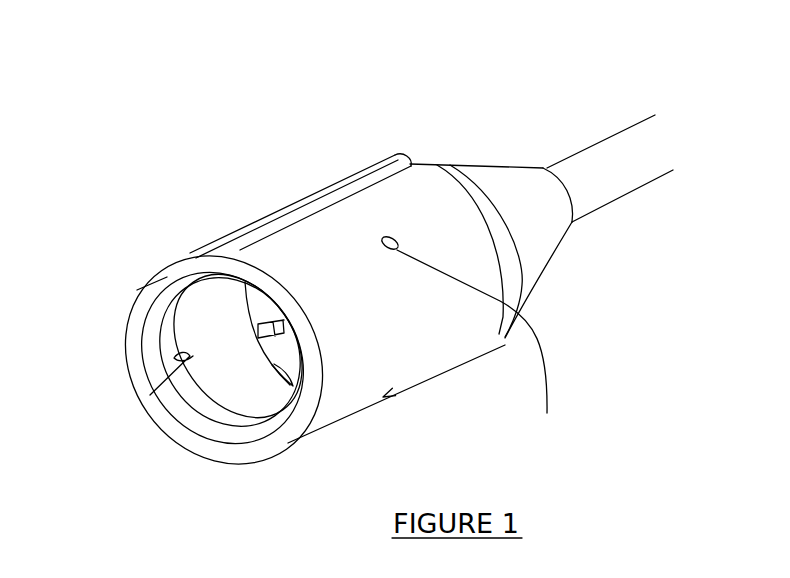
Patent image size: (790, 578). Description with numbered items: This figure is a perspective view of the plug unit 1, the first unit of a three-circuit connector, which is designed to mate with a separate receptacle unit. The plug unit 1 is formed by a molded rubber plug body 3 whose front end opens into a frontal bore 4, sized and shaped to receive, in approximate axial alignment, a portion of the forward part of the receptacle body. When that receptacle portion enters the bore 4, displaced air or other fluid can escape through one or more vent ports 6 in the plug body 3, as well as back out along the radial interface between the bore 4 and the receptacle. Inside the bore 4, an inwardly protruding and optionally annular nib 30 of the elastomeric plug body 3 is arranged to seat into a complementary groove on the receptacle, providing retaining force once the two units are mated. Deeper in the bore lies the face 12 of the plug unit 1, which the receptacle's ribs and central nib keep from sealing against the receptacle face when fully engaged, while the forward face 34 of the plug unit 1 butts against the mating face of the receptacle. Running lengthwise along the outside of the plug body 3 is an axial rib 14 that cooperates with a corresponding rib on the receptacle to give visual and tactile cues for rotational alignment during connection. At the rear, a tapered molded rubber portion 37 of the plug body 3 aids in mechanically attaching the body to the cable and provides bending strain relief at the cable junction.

The plug unit 1 is at (367, 128).
The plug body 3 is at (363, 297).
The frontal bore 4 is at (200, 442).
The vent port 6 is at (395, 405).
The face 12 is at (267, 312).
The axial rib 14 is at (313, 205).
The nib 30 is at (220, 383).
The forward face 34 is at (135, 293).
The tapered molded rubber portion 37 is at (555, 218).